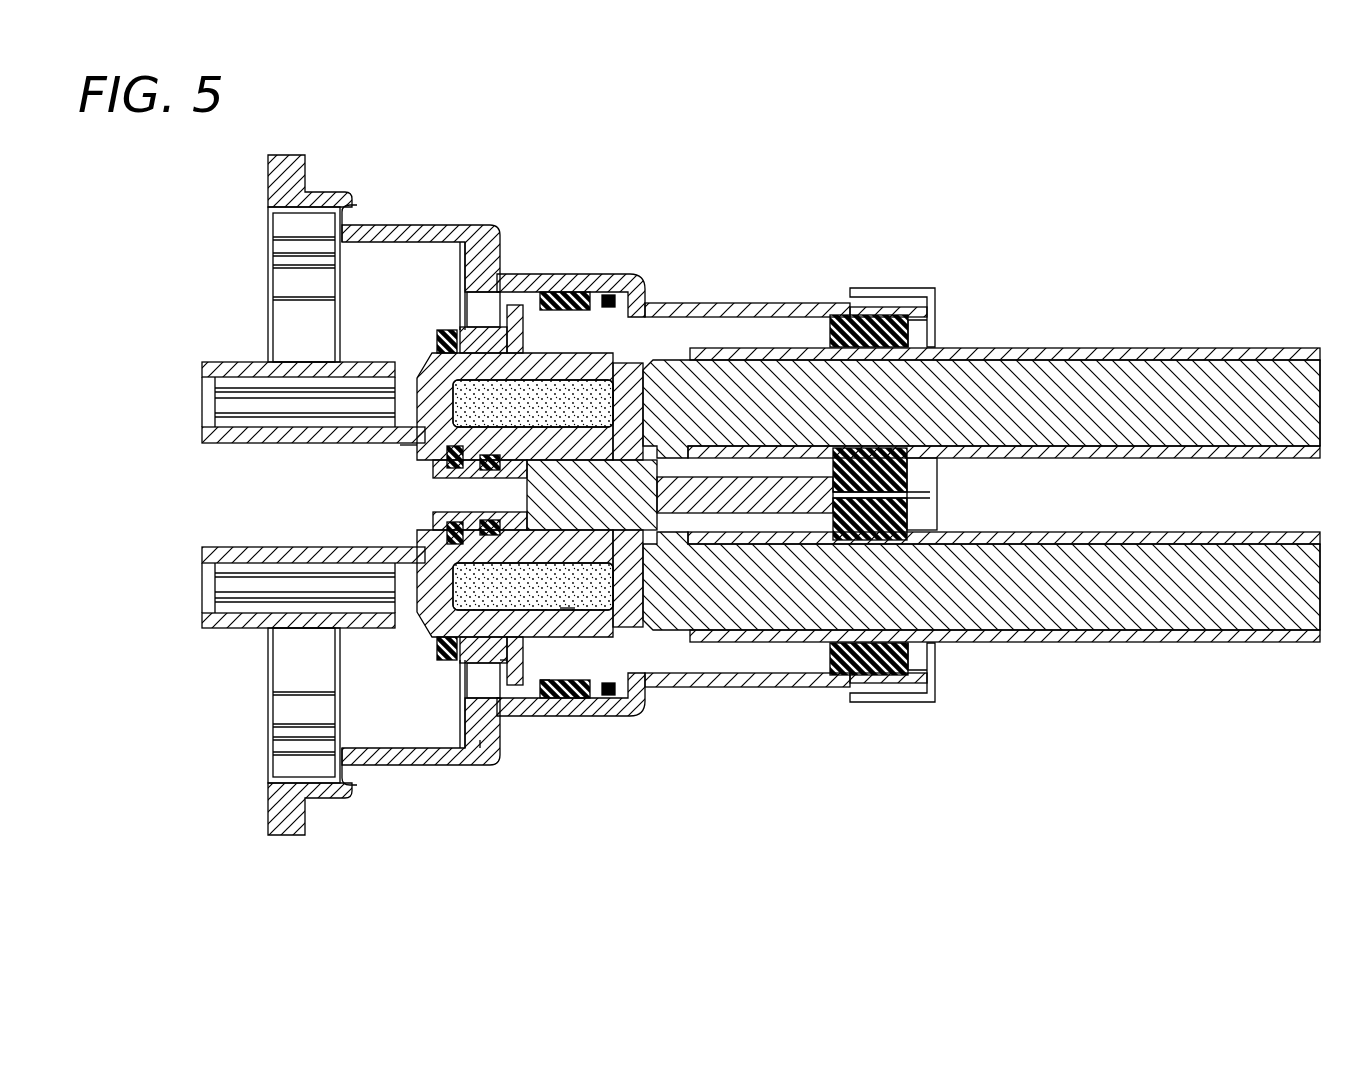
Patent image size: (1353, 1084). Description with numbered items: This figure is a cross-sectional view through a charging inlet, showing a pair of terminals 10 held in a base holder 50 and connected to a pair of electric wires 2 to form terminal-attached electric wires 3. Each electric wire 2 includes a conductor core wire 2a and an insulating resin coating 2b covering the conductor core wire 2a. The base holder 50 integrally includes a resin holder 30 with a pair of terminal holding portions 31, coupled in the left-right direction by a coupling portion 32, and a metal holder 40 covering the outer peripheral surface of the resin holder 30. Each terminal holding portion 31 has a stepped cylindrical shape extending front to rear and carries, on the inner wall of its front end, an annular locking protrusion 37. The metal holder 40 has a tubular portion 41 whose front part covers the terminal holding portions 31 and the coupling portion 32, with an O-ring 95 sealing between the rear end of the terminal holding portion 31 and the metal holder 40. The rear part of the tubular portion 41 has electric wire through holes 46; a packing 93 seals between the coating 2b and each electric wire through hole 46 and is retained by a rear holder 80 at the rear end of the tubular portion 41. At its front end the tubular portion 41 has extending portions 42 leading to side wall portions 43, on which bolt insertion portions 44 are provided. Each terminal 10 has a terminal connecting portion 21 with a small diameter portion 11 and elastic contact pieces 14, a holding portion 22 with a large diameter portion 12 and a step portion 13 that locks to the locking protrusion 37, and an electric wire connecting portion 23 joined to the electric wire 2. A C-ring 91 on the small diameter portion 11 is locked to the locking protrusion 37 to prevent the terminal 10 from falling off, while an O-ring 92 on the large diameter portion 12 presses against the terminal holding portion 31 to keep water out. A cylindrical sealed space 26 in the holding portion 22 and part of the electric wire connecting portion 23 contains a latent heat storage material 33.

The electric wire 2 is at (1195, 752).
The conductor core wire 2a is at (1047, 643).
The coating 2b is at (1178, 643).
The terminal-attached electric wire 3 is at (1185, 347).
The terminal 10 is at (372, 123).
The small diameter portion 11 is at (392, 765).
The large diameter portion 12 is at (545, 680).
The step portion 13 is at (482, 740).
The elastic contact piece 14 is at (265, 385).
The terminal connecting portion 21 is at (360, 352).
The holding portion 22 is at (490, 340).
The electric wire connecting portion 23 is at (545, 330).
The sealed space 26 is at (567, 608).
The resin holder 30 is at (572, 288).
The terminal holding portion 31 is at (473, 330).
The coupling portion 32 is at (527, 497).
The latent heat storage material 33 is at (578, 700).
The locking protrusion 37 is at (395, 445).
The metal holder 40 is at (772, 297).
The tubular portion 41 is at (727, 688).
The extending portion 42 is at (463, 662).
The side wall portion 43 is at (383, 752).
The bolt insertion portion 44 is at (268, 815).
The electric wire through hole 46 is at (786, 330).
The base holder 50 is at (586, 108).
The rear holder 80 is at (942, 305).
The C-ring 91 is at (455, 665).
The O-ring 92 is at (503, 664).
The packing 93 is at (893, 315).
The O-ring 95 is at (617, 300).